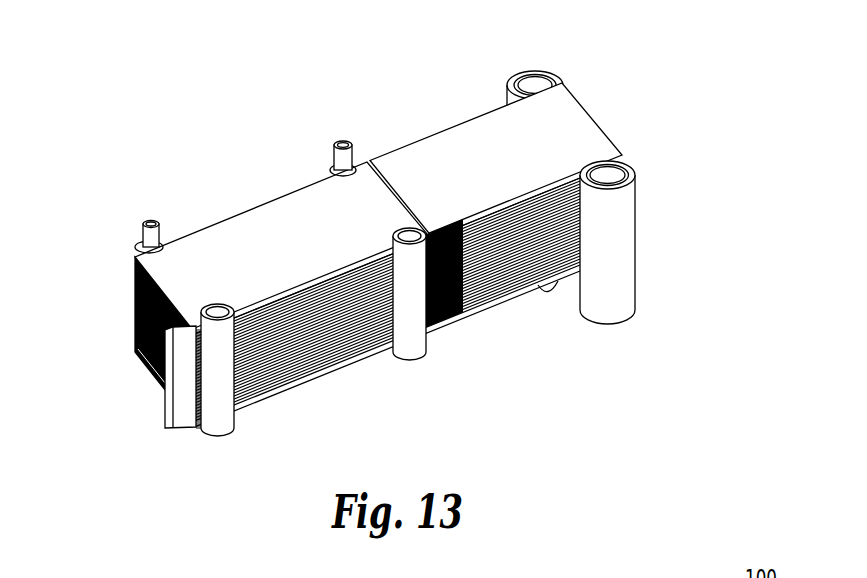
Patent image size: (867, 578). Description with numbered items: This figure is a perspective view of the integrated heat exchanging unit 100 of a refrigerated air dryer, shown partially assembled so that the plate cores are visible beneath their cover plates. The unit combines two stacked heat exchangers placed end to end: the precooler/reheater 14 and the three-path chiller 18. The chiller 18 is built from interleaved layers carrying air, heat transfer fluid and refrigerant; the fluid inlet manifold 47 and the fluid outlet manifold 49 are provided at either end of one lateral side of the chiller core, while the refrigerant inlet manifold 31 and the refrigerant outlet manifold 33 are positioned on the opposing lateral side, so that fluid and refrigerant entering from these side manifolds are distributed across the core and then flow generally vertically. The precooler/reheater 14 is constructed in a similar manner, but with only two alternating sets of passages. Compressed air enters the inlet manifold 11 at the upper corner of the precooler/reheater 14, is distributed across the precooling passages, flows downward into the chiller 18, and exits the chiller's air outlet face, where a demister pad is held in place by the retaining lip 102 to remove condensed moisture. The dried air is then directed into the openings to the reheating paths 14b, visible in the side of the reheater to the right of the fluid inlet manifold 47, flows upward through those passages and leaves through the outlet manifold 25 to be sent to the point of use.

The integrated heat exchanging unit 100 is at (637, 67).
The inlet manifold 11 is at (533, 85).
The precooler/reheater 14 is at (447, 150).
The reheating path 14b is at (472, 312).
The chiller 18 is at (240, 236).
The outlet manifold 25 is at (617, 223).
The refrigerant inlet manifold 31 is at (137, 244).
The refrigerant outlet manifold 33 is at (328, 168).
The fluid inlet manifold 47 is at (406, 324).
The fluid outlet manifold 49 is at (225, 395).
The retaining lip 102 is at (180, 375).